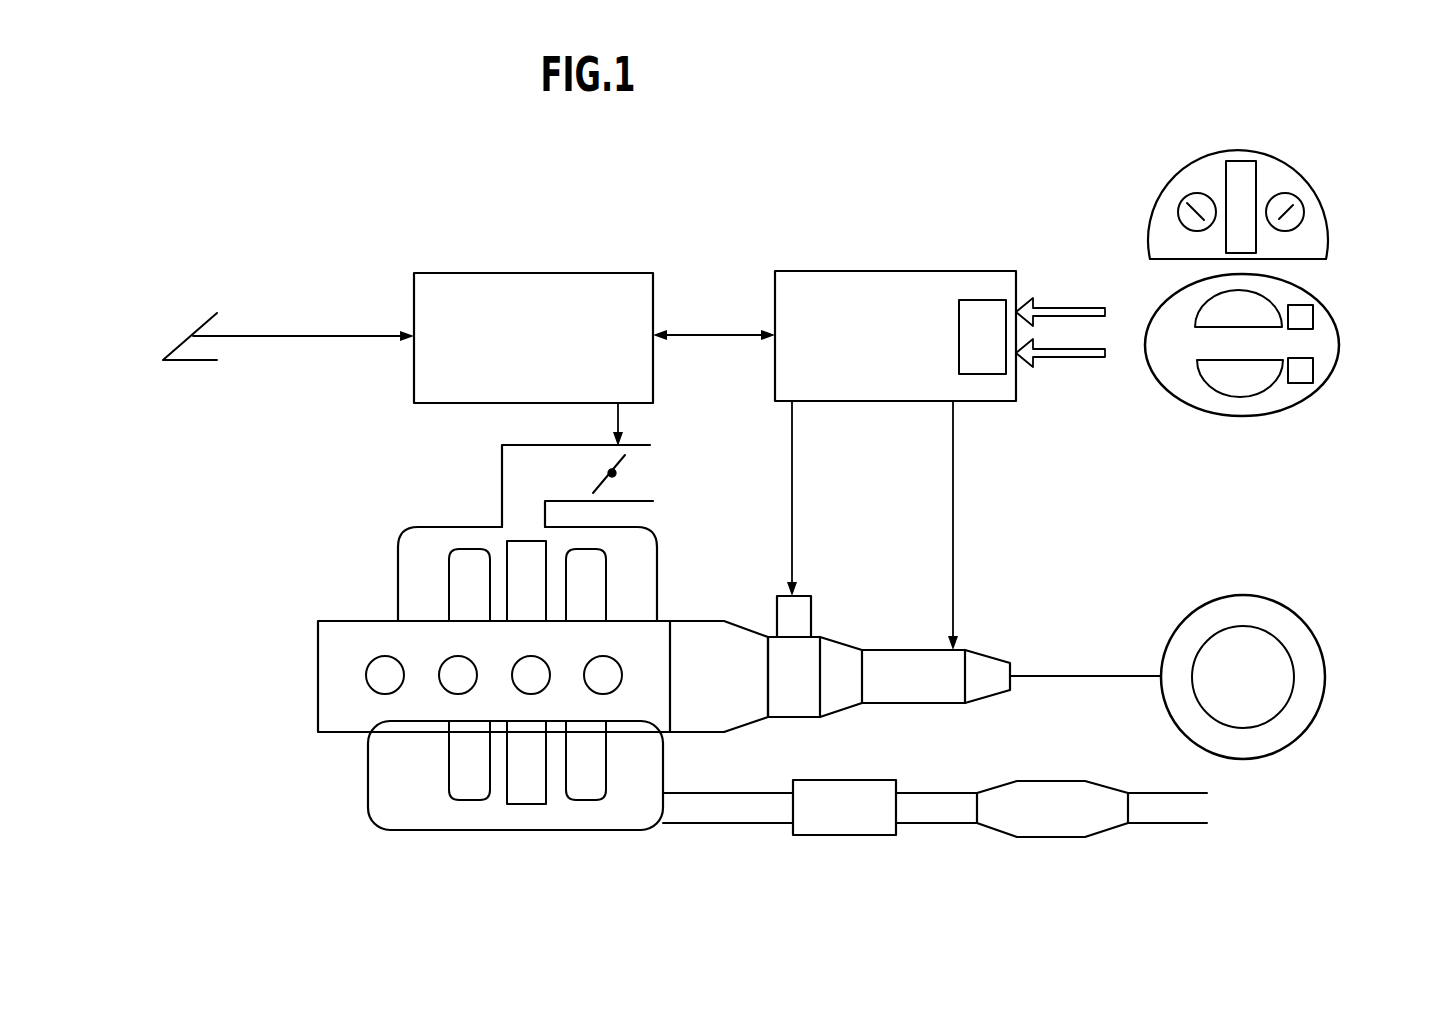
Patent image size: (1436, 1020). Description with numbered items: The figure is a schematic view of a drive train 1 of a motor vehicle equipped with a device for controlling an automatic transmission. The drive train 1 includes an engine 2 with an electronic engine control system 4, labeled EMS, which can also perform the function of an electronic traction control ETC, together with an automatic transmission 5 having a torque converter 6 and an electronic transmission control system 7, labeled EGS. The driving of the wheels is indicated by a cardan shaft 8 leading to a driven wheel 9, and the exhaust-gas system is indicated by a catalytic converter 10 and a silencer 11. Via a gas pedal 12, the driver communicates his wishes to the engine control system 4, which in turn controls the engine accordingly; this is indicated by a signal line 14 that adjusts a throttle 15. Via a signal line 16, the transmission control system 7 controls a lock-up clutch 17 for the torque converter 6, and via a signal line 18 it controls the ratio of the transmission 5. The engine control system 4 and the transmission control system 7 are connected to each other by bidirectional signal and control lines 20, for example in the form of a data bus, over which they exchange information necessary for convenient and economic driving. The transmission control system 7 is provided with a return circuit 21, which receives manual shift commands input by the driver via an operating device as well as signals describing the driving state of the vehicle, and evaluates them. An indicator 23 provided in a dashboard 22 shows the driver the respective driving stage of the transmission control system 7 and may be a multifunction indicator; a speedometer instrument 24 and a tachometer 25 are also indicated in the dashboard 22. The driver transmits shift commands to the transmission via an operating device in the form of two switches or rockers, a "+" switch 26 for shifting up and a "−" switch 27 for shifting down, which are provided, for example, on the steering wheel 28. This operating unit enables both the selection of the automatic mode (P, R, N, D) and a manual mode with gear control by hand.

The drive train 1 is at (316, 543).
The engine 2 is at (338, 722).
The electronic engine control system 4 is at (438, 272).
The automatic transmission 5 is at (897, 653).
The torque converter 6 is at (800, 705).
The electronic transmission control system 7 is at (870, 270).
The cardan shaft 8 is at (1090, 675).
The driven wheel 9 is at (1237, 603).
The catalytic converter 10 is at (835, 826).
The silencer 11 is at (1048, 825).
The gas pedal 12 is at (208, 317).
The signal line 14 is at (620, 408).
The throttle 15 is at (616, 474).
The signal line 16 is at (793, 443).
The lock-up clutch 17 is at (810, 613).
The signal line 18 is at (953, 503).
The bidirectional signal and control lines 20 is at (690, 333).
The return circuit 21 is at (973, 298).
The dashboard 22 is at (1315, 240).
The indicator 23 is at (1235, 160).
The speedometer instrument 24 is at (1180, 212).
The tachometer 25 is at (1302, 212).
The "+" switch 26 is at (1310, 308).
The "−" switch 27 is at (1310, 365).
The steering wheel 28 is at (1247, 417).